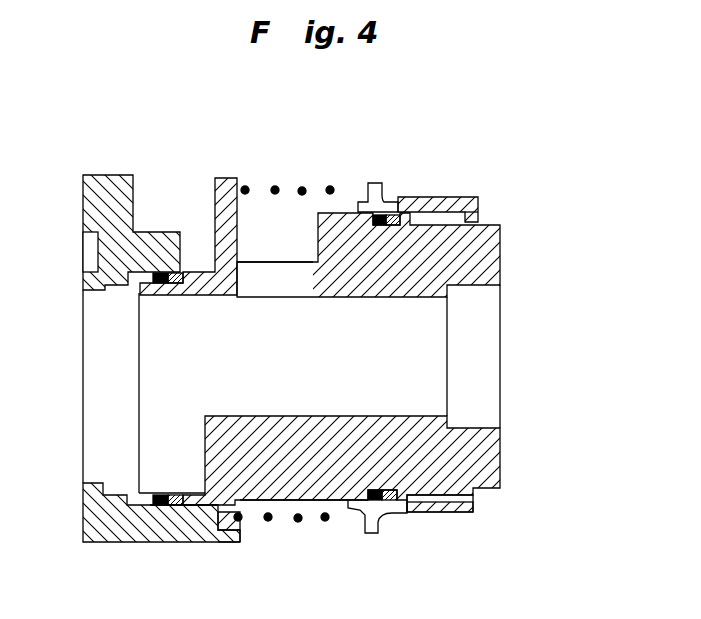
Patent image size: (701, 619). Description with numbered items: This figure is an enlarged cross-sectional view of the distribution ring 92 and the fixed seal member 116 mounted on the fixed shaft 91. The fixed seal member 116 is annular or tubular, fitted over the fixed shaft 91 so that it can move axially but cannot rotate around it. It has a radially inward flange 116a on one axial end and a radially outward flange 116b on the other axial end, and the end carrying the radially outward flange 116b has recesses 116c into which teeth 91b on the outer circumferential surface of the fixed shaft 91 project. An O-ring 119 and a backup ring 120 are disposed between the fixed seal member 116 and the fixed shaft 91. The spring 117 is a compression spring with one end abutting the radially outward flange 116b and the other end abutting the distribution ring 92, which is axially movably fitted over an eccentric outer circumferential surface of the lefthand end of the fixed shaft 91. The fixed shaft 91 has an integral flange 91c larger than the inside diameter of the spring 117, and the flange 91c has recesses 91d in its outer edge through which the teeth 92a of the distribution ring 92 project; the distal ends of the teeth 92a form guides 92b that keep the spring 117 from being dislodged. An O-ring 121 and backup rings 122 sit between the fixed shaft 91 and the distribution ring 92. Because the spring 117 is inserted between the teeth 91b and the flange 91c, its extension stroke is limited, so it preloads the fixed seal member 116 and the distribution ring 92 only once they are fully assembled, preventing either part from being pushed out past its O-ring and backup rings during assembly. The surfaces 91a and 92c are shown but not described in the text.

The fixed shaft 91 is at (488, 254).
The thin flange of rotary member 91a is at (312, 277).
The teeth 91b is at (346, 504).
The flange 91c is at (223, 183).
The recesses 91d is at (222, 514).
The distribution ring 92 is at (116, 533).
The teeth 92a is at (197, 524).
The guides 92b is at (232, 540).
The housing upper portion 92c is at (82, 202).
The fixed seal member 116 is at (428, 203).
The radially inward flange 116a is at (480, 210).
The radially outward flange 116b is at (376, 183).
The recesses 116c is at (410, 514).
The spring 117 is at (277, 188).
The O-ring 119 is at (376, 226).
The backup ring 120 is at (390, 227).
The O-ring 121 is at (170, 284).
The backup rings 122 is at (172, 496).